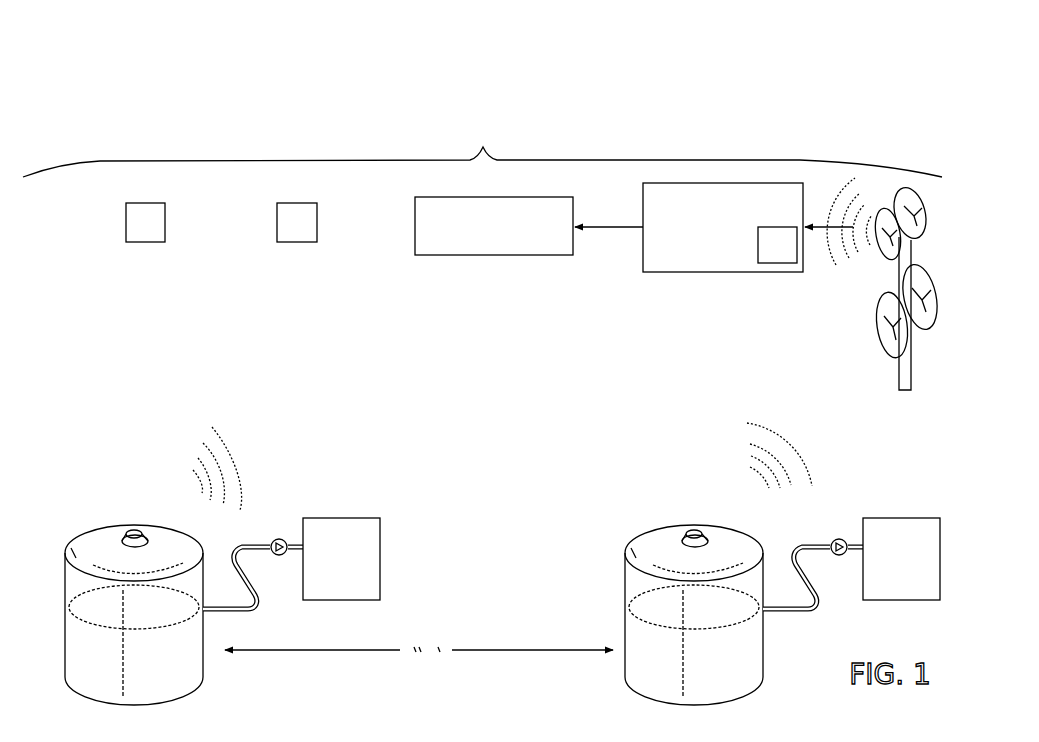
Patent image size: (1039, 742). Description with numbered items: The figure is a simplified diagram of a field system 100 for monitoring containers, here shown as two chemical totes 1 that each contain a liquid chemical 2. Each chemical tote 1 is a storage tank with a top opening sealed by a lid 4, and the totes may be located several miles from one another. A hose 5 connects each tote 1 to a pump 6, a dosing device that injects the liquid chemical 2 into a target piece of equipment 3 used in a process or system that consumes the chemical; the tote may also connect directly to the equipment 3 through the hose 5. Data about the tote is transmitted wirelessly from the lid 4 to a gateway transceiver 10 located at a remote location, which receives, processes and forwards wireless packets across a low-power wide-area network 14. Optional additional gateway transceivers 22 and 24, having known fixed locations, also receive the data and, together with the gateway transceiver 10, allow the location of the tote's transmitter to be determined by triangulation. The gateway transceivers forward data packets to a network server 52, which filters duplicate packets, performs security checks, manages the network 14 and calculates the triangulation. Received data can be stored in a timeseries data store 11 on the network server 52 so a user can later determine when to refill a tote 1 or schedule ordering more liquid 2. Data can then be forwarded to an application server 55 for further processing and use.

The system 100 is at (150, 57).
The low-power wide-area network 14 is at (481, 135).
The additional gateway transceiver 22 is at (137, 230).
The additional gateway transceiver 24 is at (289, 230).
The application server 55 is at (486, 243).
The network server 52 is at (714, 233).
The timeseries data store 11 is at (770, 253).
The gateway transceiver 10 is at (851, 345).
The chemical tote 1 is at (58, 570).
The liquid chemical 2 is at (95, 664).
The equipment 3 is at (337, 569).
The lid 4 is at (136, 523).
The hose 5 is at (226, 558).
The pump 6 is at (272, 538).